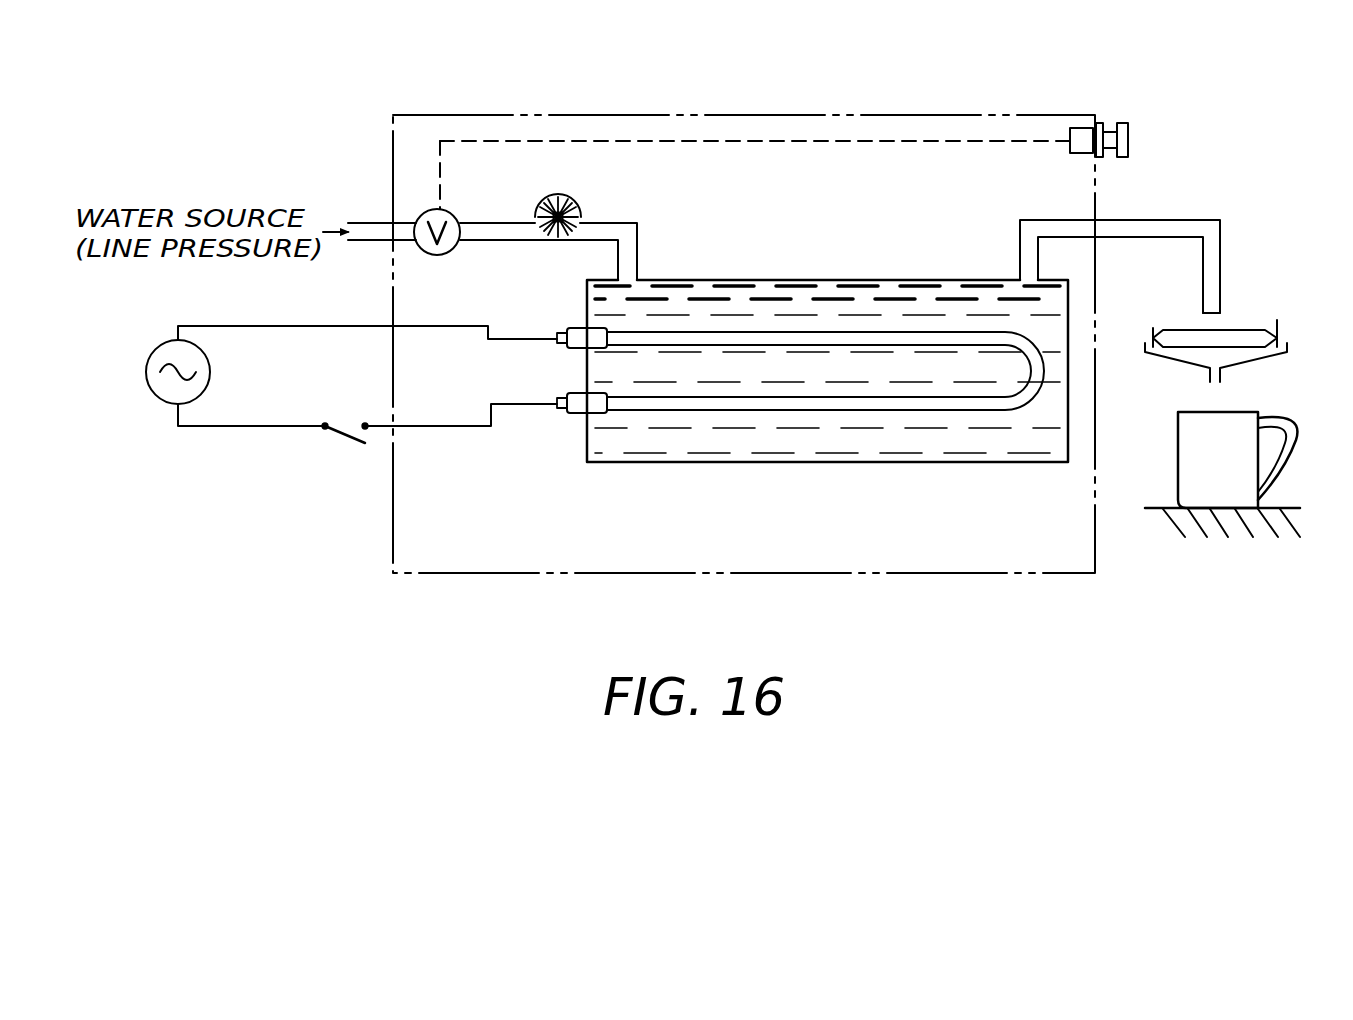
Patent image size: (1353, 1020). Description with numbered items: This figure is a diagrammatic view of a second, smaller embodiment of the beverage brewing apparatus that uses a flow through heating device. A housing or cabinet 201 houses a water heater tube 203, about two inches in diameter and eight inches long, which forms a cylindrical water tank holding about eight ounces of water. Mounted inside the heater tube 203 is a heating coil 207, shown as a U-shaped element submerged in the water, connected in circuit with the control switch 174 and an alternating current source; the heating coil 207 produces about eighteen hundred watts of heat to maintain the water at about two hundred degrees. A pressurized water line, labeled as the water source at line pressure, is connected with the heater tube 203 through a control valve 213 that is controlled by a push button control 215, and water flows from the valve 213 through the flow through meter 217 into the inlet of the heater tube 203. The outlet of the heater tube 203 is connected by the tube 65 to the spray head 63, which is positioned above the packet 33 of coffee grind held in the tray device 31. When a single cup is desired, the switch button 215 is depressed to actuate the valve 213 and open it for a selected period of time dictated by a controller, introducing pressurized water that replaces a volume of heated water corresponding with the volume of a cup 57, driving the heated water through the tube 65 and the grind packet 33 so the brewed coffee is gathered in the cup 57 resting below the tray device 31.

The housing 201 is at (902, 110).
The water heater tube 203 is at (784, 268).
The heating coil 207 is at (838, 403).
The control valve 213 is at (452, 215).
The push button control 215 is at (1128, 136).
The flow through meter 217 is at (580, 206).
The control switch 174 is at (338, 440).
The tube 65 is at (1138, 218).
The spray head 63 is at (1203, 309).
The packet 33 is at (1270, 318).
The tray device 31 is at (1272, 360).
The cup 57 is at (1180, 426).